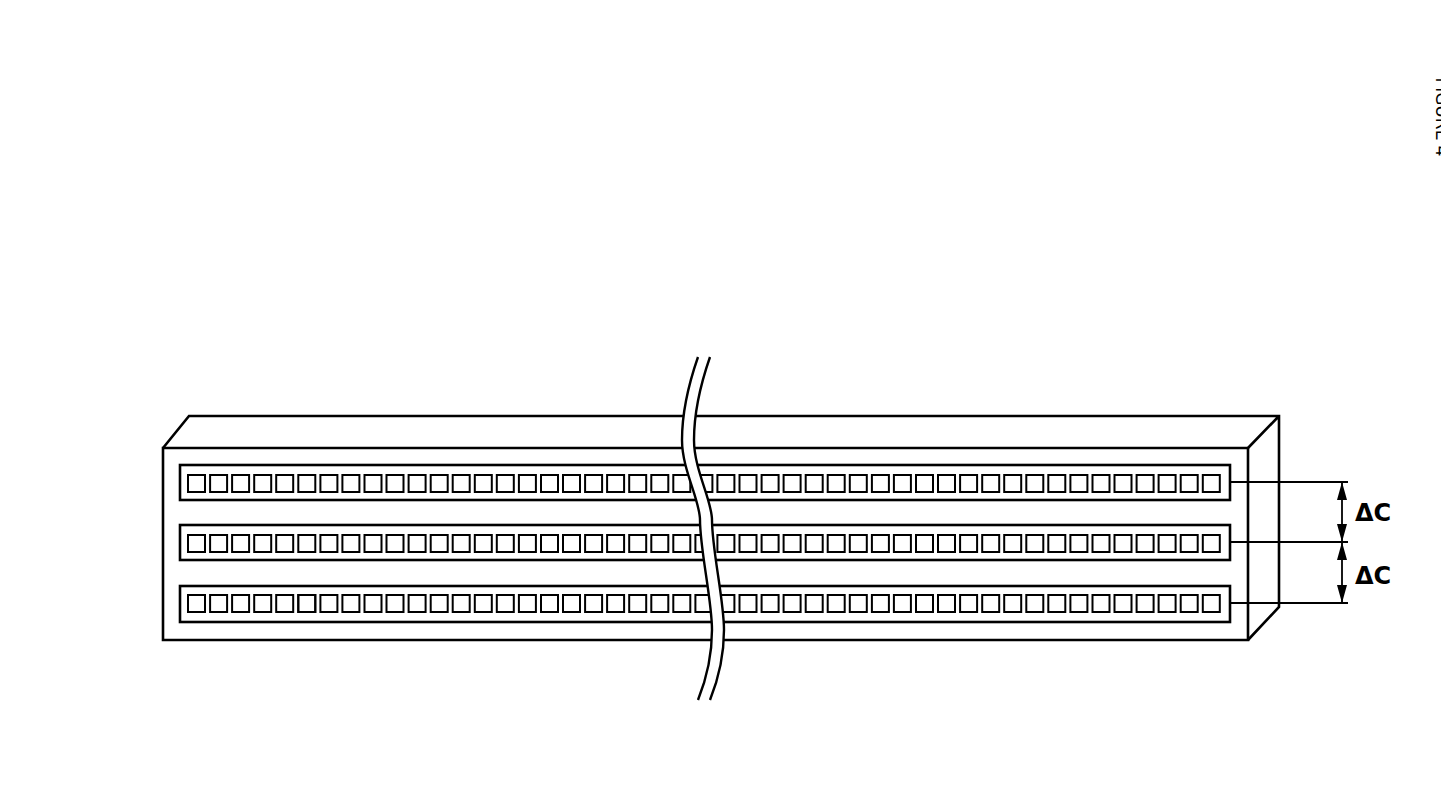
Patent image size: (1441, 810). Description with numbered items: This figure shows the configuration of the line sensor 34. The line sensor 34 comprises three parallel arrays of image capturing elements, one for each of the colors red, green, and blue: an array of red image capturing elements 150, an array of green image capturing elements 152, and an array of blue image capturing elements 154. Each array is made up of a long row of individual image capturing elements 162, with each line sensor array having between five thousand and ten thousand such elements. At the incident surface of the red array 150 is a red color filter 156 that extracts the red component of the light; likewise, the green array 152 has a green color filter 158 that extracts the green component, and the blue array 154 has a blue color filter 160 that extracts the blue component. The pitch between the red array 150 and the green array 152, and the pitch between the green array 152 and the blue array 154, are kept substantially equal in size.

The line sensor 34 is at (438, 416).
The array of red image capturing elements 150 is at (658, 418).
The array of green image capturing elements 152 is at (658, 627).
The array of blue image capturing elements 154 is at (658, 657).
The red color filter 156 is at (1117, 464).
The green color filter 158 is at (973, 561).
The blue color filter 160 is at (1103, 623).
The image capturing element 162 is at (308, 604).